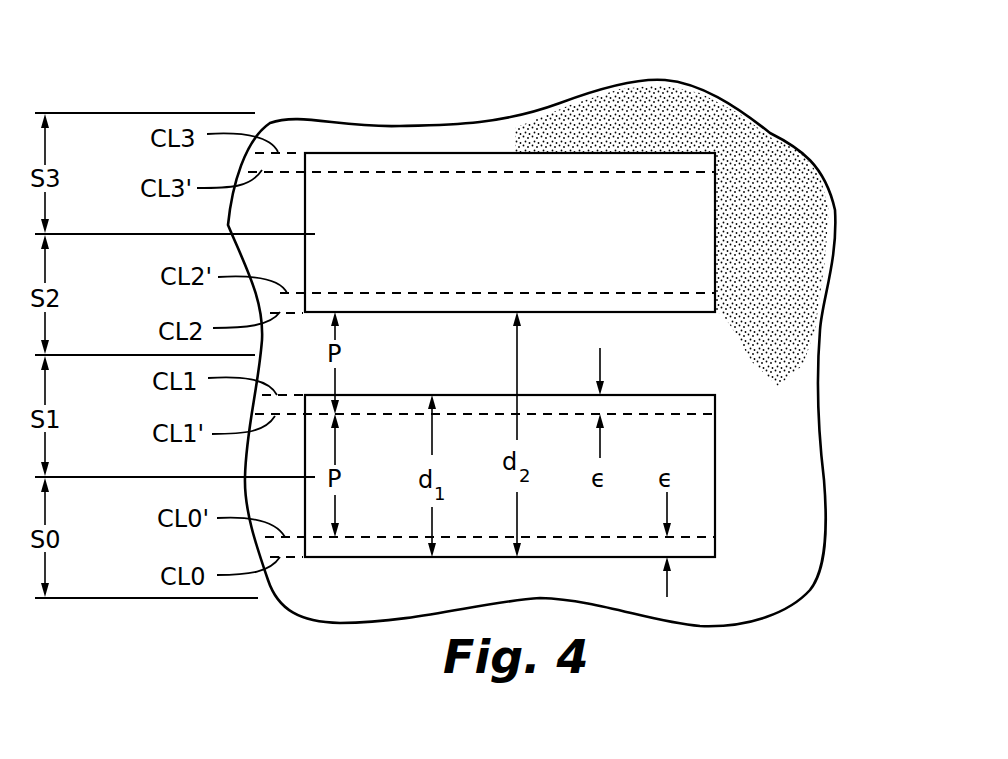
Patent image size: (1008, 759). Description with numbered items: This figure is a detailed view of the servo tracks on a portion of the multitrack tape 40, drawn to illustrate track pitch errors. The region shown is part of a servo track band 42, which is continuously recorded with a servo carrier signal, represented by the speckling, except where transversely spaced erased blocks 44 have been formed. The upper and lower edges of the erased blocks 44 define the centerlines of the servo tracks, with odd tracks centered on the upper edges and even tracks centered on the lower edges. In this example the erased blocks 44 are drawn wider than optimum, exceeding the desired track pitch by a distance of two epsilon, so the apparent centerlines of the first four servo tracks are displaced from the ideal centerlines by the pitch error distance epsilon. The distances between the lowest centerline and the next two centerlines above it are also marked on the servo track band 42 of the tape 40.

The multitrack tape 40 is at (628, 56).
The servo track band 42 is at (803, 323).
The erased block 44 is at (414, 160).